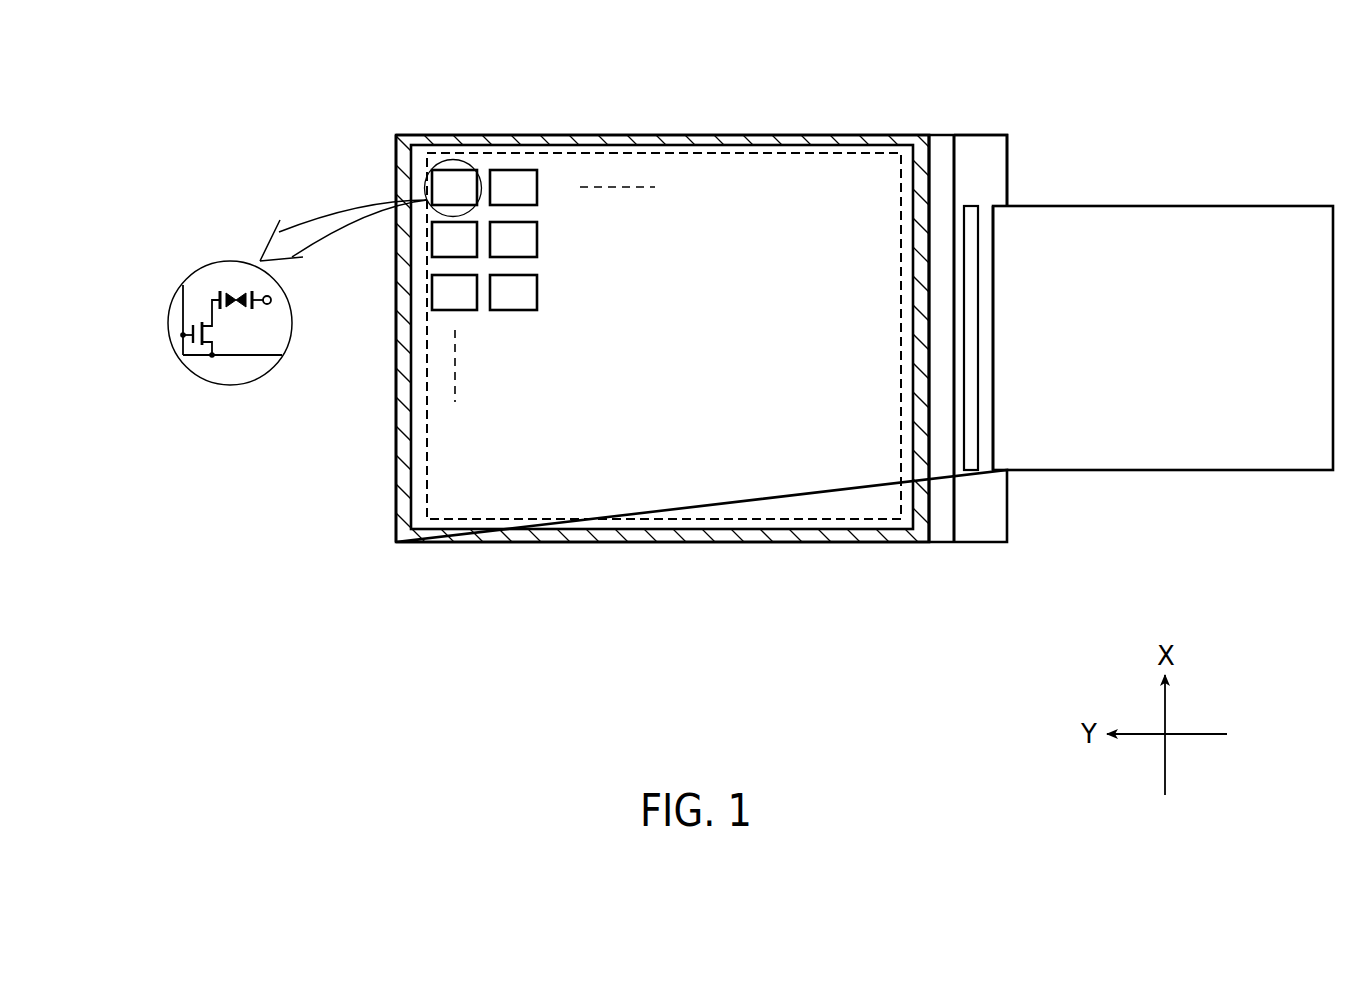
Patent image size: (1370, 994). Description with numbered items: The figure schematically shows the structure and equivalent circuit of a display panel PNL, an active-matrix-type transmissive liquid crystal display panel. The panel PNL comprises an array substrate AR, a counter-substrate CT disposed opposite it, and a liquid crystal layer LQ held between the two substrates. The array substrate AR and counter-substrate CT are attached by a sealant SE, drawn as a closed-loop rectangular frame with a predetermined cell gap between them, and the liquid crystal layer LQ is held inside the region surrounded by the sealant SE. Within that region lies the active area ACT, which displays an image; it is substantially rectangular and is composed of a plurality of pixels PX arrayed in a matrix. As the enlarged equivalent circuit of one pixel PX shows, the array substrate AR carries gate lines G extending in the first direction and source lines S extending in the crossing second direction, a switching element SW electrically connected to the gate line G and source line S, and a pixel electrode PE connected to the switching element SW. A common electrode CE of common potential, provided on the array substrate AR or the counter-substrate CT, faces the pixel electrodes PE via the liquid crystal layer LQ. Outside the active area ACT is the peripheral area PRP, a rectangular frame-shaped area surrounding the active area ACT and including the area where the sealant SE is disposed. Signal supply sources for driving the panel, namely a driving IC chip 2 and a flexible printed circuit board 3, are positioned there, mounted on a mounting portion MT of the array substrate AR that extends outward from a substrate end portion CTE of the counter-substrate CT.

The display panel PNL is at (979, 548).
The sealant SE is at (727, 133).
The peripheral area PRP is at (937, 142).
The counter-substrate CT is at (942, 530).
The array substrate AR is at (996, 527).
The substrate end portion CTE is at (958, 154).
The mounting portion MT is at (988, 477).
The driving IC chip 2 is at (972, 205).
The flexible printed circuit (FPC) board 3 is at (1176, 205).
The active area ACT is at (780, 524).
The pixel PX is at (453, 168).
The gate line G is at (182, 300).
The source line S is at (245, 356).
The switching element SW is at (216, 335).
The pixel electrode PE is at (218, 292).
The liquid crystal layer LQ is at (240, 293).
The common electrode CE is at (281, 300).